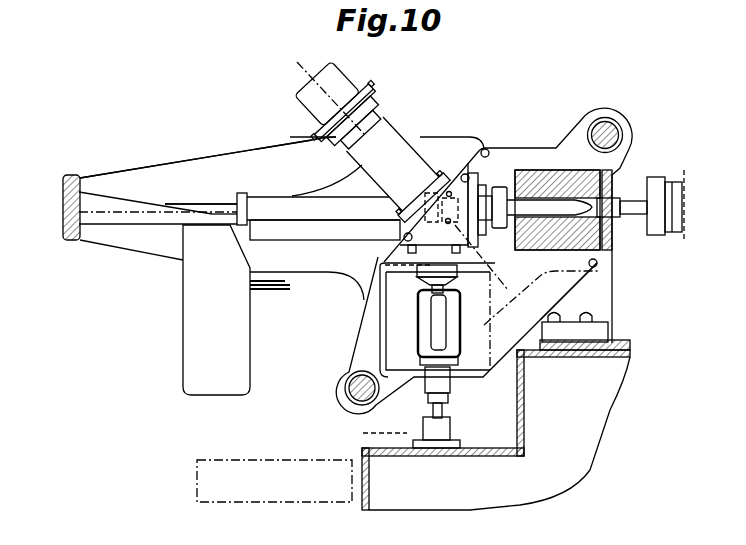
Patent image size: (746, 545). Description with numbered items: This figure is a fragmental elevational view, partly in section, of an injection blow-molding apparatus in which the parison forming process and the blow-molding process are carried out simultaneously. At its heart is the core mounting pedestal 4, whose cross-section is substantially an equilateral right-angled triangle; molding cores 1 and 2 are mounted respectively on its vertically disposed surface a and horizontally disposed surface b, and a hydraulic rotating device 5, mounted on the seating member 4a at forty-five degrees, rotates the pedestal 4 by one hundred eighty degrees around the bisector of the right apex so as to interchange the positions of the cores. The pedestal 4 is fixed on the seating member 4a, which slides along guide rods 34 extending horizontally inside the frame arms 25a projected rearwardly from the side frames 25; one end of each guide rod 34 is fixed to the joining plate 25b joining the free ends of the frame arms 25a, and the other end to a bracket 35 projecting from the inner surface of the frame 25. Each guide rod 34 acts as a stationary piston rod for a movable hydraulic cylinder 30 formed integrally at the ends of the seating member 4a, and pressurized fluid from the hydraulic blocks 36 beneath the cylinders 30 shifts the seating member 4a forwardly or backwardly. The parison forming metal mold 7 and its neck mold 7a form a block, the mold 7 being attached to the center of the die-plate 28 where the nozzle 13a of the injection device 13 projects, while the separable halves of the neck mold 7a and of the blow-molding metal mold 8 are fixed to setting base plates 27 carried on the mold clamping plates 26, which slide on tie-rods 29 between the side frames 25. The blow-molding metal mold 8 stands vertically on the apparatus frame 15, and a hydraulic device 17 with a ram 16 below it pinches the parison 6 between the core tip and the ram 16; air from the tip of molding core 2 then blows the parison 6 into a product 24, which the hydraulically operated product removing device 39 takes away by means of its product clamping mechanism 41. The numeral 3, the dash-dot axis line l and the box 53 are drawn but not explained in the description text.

The molding core 1 is at (545, 190).
The molding core 2 is at (428, 312).
The spindle arm 3 is at (287, 197).
The core mounting pedestal 4 is at (466, 175).
The seating member 4a is at (347, 187).
The rotating device 5 is at (356, 79).
The parison 6 is at (535, 195).
The parison forming metal mold 7 is at (568, 291).
The neck mold 7a is at (542, 289).
The blow-molding metal mold 8 is at (360, 297).
The injection device 13 is at (680, 240).
The nozzle 13a is at (620, 250).
The apparatus frame 15 is at (598, 405).
The ram 16 is at (448, 380).
The hydraulic device 17 is at (452, 426).
The product 24 is at (430, 340).
The side frame 25 is at (425, 136).
The frame arm 25a is at (220, 156).
The joining plate 25b is at (72, 178).
The mold clamping plate 26 is at (567, 148).
The setting base plate 27 is at (576, 282).
The die-plate 28 is at (647, 190).
The tie-rod 29 is at (614, 118).
The hydraulic cylinder 30 is at (266, 197).
The guide rod 34 is at (216, 207).
The bracket 35 is at (447, 180).
The hydraulic block 36 is at (298, 232).
The product removing device 39 is at (182, 329).
The product clamping mechanism 41 is at (279, 291).
The control unit 53 is at (268, 465).
The vertically disposed surface a is at (492, 175).
The horizontally disposed surface b is at (395, 246).
The axis line l is at (397, 172).